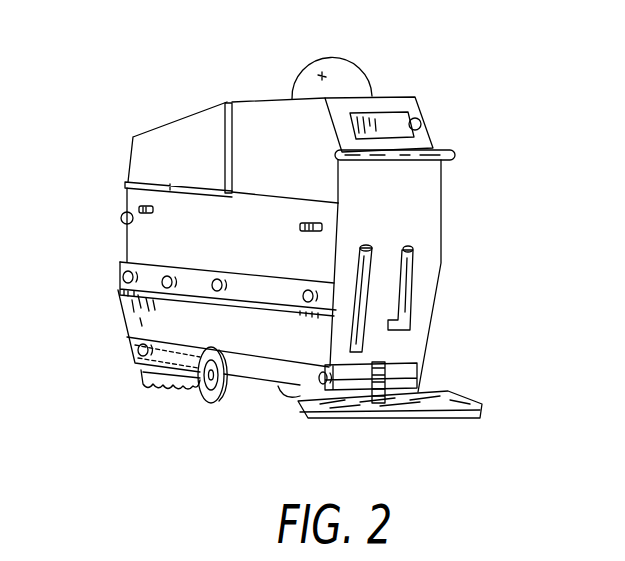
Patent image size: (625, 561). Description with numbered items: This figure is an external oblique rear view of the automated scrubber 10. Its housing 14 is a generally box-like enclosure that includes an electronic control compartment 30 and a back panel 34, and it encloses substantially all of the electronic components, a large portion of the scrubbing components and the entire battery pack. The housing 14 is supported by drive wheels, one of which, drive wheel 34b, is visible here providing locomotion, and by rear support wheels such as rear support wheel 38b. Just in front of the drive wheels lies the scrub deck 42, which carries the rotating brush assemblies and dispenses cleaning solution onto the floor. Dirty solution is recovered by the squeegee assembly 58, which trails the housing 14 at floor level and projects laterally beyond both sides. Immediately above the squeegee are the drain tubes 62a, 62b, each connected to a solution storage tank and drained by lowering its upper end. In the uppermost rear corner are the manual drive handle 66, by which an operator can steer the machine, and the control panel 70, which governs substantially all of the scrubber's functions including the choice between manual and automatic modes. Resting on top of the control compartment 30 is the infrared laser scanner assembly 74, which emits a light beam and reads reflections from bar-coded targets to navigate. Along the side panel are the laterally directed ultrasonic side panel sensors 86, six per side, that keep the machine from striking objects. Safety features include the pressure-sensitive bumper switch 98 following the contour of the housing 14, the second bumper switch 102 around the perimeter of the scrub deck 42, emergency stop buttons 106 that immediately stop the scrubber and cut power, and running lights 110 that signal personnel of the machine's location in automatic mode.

The automated scrubber 10 is at (149, 91).
The housing 14 is at (125, 235).
The electronic control compartment 30 is at (252, 112).
The back panel 34 is at (432, 288).
The drive wheel 34b is at (208, 402).
The rear support wheel 38b is at (277, 398).
The scrub deck 42 is at (148, 385).
The squeegee assembly 58 is at (433, 422).
The drain tube 62a is at (368, 245).
The drain tube 62b is at (410, 248).
The manual drive handle 66 is at (455, 150).
The control panel 70 is at (405, 110).
The infrared laser scanner assembly 74 is at (358, 70).
The ultrasonic side panel sensors 86 is at (122, 278).
The bumper switch 98 is at (118, 290).
The second bumper switch 102 is at (140, 367).
The emergency stop button 106 is at (425, 118).
The running lights 110 is at (137, 205).